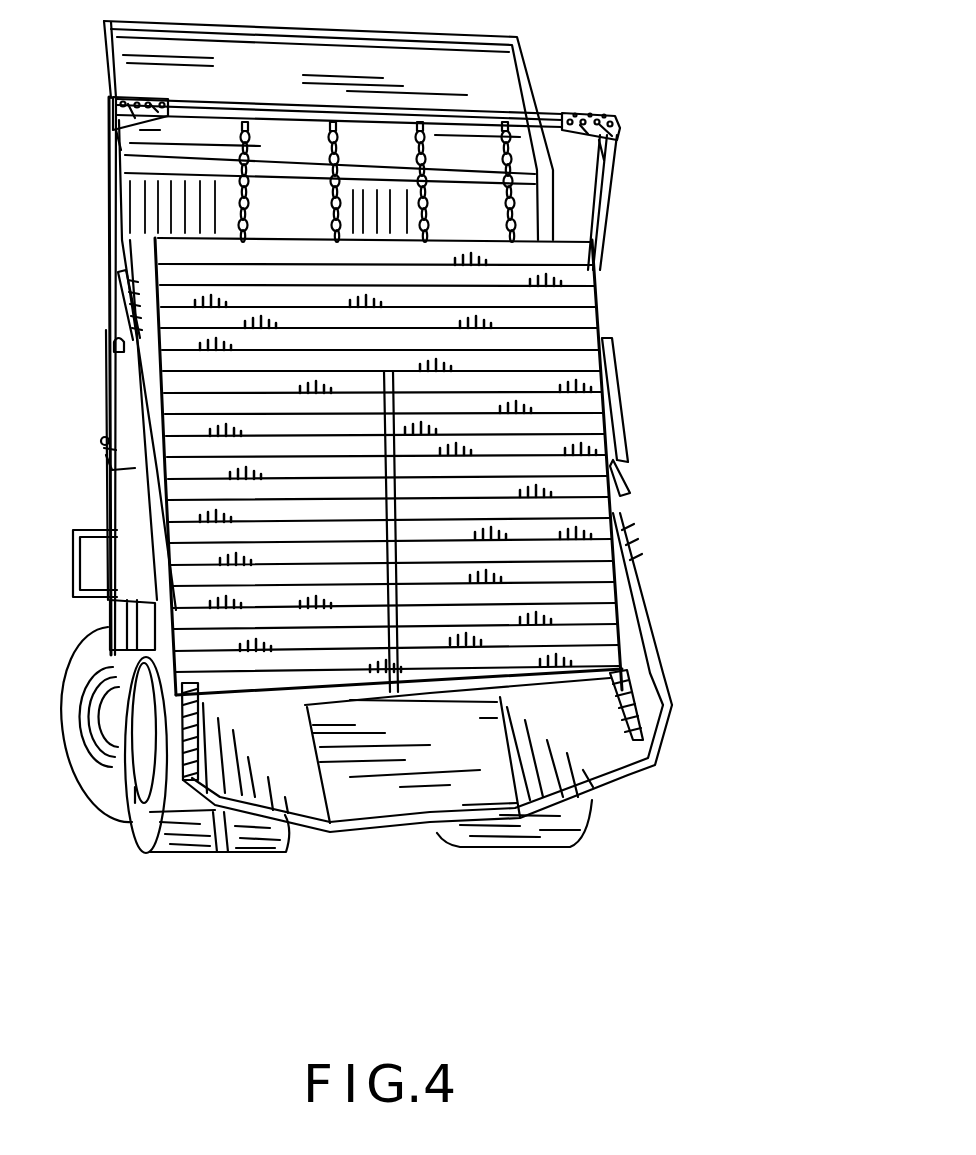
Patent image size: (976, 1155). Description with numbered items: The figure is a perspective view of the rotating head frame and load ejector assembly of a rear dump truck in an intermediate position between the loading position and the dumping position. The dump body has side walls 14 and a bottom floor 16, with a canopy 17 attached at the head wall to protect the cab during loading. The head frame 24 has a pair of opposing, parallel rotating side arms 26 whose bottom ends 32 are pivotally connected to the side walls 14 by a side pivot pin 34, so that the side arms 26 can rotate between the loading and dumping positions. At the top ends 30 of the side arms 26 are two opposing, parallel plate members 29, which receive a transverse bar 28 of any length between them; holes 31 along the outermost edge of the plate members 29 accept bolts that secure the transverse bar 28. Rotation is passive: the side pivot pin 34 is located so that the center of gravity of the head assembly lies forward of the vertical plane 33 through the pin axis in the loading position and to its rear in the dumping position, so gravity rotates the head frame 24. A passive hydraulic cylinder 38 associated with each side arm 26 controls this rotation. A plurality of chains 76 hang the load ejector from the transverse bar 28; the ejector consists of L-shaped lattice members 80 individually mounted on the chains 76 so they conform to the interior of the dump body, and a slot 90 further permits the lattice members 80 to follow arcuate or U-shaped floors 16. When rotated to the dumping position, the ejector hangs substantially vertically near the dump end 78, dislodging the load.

The side walls 14 is at (110, 620).
The bottom floor 16 is at (400, 800).
The canopy 17 is at (527, 70).
The head frame 24 is at (632, 322).
The rotating side arms 26 is at (115, 185).
The transverse bar 28 is at (548, 110).
The plate members 29 is at (121, 100).
The top ends of the side arms 30 is at (115, 132).
The holes 31 is at (118, 109).
The bottom ends of the side arms 32 is at (107, 395).
The vertical plane 33 is at (114, 108).
The side pivot pin 34 is at (110, 434).
The passive hydraulic cylinder 38 is at (117, 353).
The chains 76 is at (507, 200).
The dump end 78 is at (438, 820).
The L-shaped lattice members 80 is at (600, 512).
The slot 90 is at (400, 653).